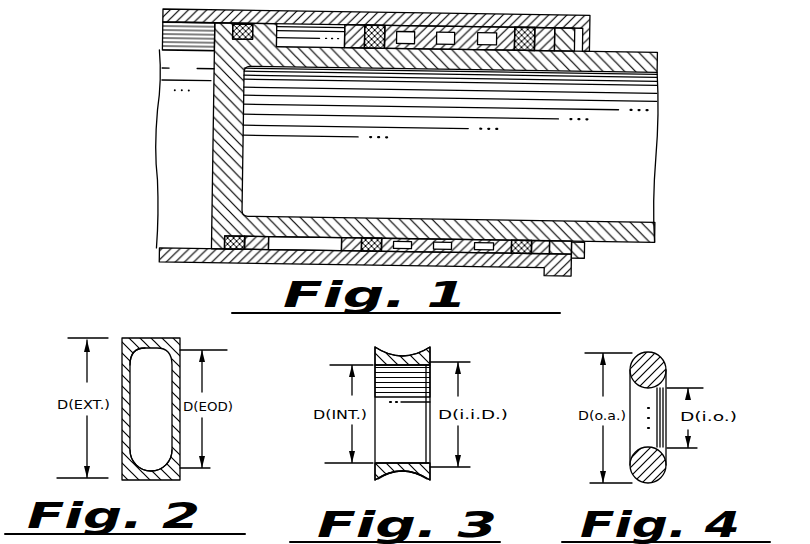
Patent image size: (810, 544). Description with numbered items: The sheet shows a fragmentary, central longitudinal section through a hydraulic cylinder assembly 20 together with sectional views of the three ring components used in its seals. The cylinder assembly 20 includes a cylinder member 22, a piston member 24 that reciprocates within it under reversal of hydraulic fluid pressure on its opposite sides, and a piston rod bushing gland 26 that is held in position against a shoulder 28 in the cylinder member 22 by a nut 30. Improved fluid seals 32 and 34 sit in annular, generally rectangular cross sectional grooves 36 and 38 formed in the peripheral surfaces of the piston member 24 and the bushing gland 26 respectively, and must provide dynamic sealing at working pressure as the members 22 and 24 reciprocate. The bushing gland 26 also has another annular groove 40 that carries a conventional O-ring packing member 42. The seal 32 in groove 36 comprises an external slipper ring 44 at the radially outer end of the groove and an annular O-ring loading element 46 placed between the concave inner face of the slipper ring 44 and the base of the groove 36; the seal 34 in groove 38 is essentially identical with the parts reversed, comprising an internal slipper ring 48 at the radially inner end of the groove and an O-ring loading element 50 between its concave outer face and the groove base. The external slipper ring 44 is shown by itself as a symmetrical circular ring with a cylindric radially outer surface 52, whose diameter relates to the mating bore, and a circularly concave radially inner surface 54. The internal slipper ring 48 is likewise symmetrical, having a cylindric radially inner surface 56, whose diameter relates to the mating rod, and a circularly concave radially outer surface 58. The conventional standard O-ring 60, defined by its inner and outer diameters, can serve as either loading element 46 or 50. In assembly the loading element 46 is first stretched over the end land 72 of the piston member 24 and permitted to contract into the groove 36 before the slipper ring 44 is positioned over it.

In FIG. 1, the cylinder assembly 20 is at (682, 59).
In FIG. 1, the cylinder member 22 is at (163, 15).
In FIG. 1, the piston member 24 is at (406, 138).
In FIG. 1, the piston rod bushing gland 26 is at (422, 219).
In FIG. 1, the shoulder 28 is at (351, 219).
In FIG. 1, the nut 30 is at (589, 251).
In FIG. 1, the fluid seal 32 is at (249, 242).
In FIG. 1, the fluid seal 34 is at (545, 223).
In FIG. 1, the groove 36 is at (261, 38).
In FIG. 1, the groove 38 is at (504, 48).
In FIG. 1, the groove 40 is at (401, 48).
In FIG. 1, the O-ring packing member 42 is at (384, 219).
In FIG. 1, the external slipper ring 44 is at (233, 252).
In FIG. 2, the external slipper ring 44 is at (181, 349).
In FIG. 1, the O-ring loading element 46 is at (235, 237).
In FIG. 1, the internal slipper ring 48 is at (523, 243).
In FIG. 3, the internal slipper ring 48 is at (432, 352).
In FIG. 1, the O-ring loading element 50 is at (530, 243).
In FIG. 2, the cylindric radially outer surface 52 is at (143, 355).
In FIG. 2, the circularly concave radially inner surface 54 is at (151, 419).
In FIG. 3, the cylindric radially inner surface 56 is at (399, 463).
In FIG. 3, the circularly concave radially outer surface 58 is at (404, 473).
In FIG. 4, the O-ring 60 is at (661, 362).
In FIG. 1, the end land 72 is at (233, 30).